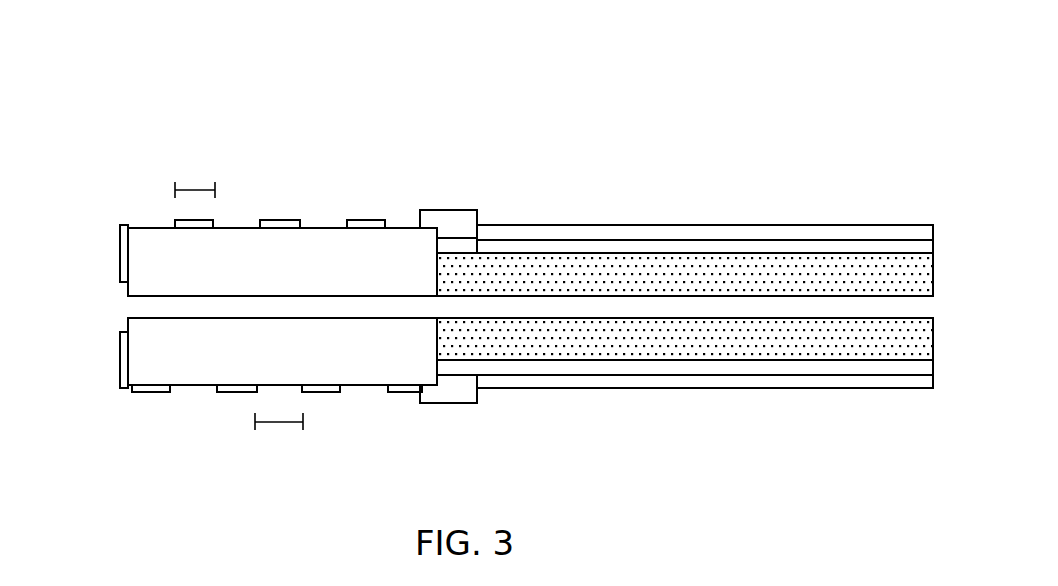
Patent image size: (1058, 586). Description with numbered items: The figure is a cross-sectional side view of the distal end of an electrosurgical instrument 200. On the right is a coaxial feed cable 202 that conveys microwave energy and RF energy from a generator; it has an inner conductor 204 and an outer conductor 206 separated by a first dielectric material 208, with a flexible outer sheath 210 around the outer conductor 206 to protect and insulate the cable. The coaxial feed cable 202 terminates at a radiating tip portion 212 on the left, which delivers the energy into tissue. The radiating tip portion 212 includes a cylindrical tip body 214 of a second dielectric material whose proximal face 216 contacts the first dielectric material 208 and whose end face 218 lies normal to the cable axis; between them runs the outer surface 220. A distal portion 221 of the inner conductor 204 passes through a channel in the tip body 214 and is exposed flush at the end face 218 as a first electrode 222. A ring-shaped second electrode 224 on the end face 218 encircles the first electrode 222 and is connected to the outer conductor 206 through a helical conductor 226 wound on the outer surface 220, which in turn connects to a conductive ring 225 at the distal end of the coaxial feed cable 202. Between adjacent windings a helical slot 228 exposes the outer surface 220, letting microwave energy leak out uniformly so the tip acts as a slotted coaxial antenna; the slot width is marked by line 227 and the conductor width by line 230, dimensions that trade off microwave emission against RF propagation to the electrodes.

The electrosurgical instrument 200 is at (375, 88).
The coaxial feed cable 202 is at (785, 137).
The inner conductor 204 is at (485, 295).
The outer conductor 206 is at (598, 240).
The first dielectric material 208 is at (582, 345).
The flexible outer sheath 210 is at (678, 225).
The radiating tip portion 212 is at (275, 137).
The tip body 214 is at (392, 360).
The proximal face 216 is at (438, 338).
The end face 218 is at (128, 319).
The outer surface 220 is at (360, 390).
The distal portion of the inner conductor 221 is at (310, 295).
The first electrode 222 is at (128, 306).
The second electrode 224 is at (118, 358).
The conductive ring 225 is at (447, 210).
The helical conductor 226 is at (233, 392).
The line illustrating the width of the helical slot 227 is at (282, 422).
The helical slot 228 is at (188, 390).
The line illustrating the width of the helical conductor 230 is at (198, 188).